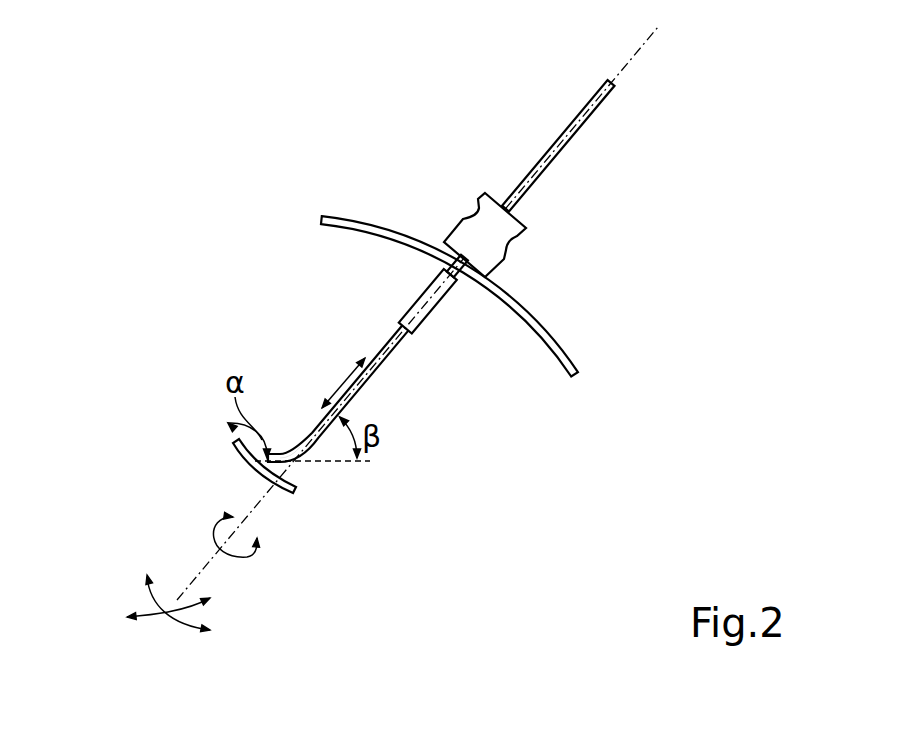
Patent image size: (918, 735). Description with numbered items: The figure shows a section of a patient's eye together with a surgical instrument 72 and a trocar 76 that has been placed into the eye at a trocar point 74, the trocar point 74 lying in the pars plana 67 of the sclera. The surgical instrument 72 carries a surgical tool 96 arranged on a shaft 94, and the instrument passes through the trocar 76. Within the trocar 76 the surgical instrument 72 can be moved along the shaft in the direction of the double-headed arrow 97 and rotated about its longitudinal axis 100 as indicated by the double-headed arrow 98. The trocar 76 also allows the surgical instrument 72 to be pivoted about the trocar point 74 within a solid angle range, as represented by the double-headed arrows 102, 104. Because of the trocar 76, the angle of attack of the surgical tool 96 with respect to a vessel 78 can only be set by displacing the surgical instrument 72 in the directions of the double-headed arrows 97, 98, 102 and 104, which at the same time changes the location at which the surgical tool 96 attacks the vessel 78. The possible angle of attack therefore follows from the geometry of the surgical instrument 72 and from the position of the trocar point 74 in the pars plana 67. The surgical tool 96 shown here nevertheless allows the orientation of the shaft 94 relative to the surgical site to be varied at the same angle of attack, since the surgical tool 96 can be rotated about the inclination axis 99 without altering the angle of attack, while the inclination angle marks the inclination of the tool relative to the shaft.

The pars plana 67 is at (563, 350).
The surgical instrument 72 is at (565, 148).
The trocar point 74 is at (462, 262).
The trocar 76 is at (458, 225).
The vessel 78 is at (246, 461).
The shaft 94 is at (377, 377).
The surgical tool 96 is at (288, 460).
The double-headed arrow 97 is at (342, 382).
The double-headed arrow 98 is at (250, 558).
The inclination axis 99 is at (337, 465).
The longitudinal axis 100 is at (637, 52).
The double-headed arrow 102 is at (147, 598).
The double-headed arrow 104 is at (177, 615).